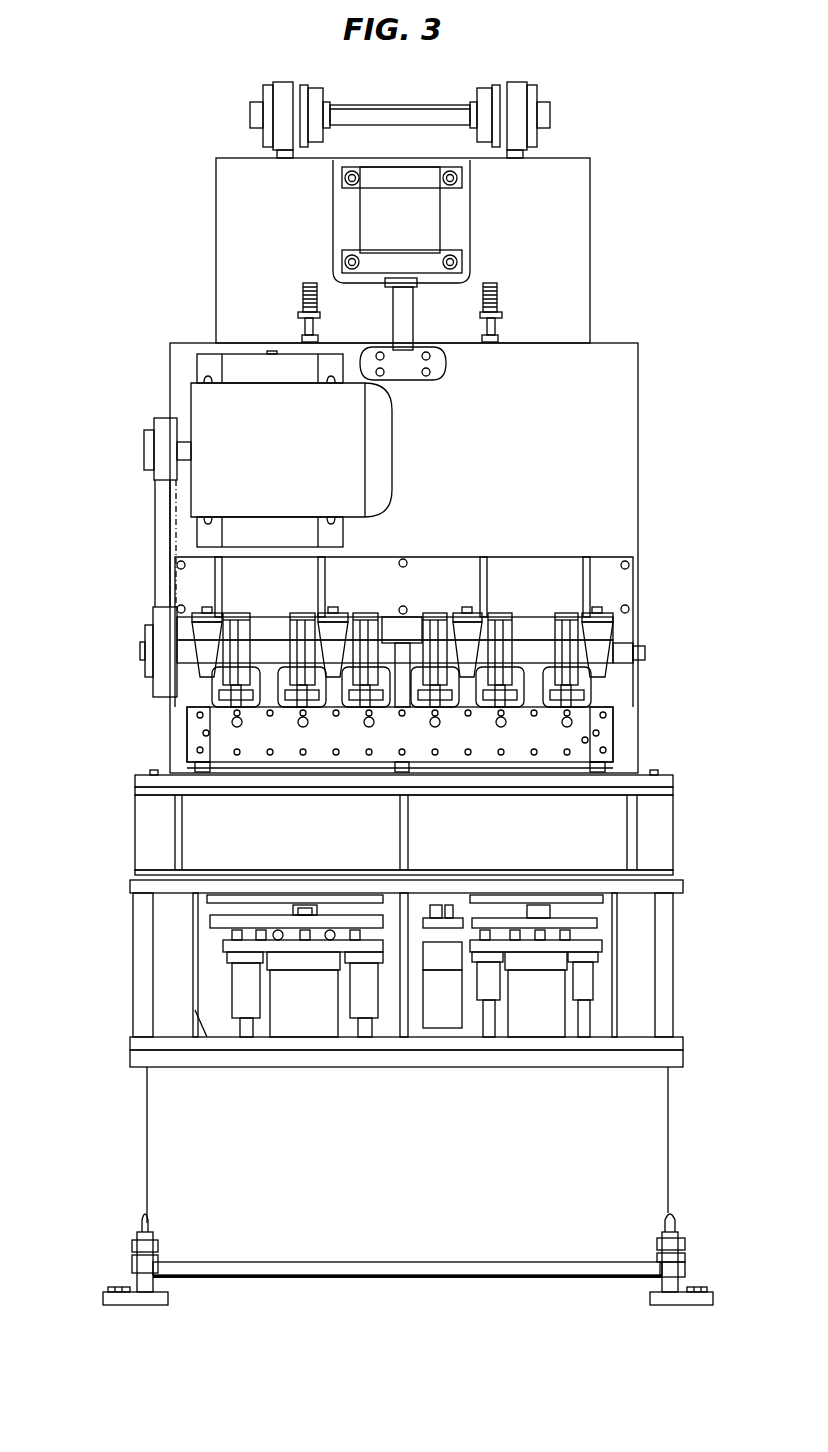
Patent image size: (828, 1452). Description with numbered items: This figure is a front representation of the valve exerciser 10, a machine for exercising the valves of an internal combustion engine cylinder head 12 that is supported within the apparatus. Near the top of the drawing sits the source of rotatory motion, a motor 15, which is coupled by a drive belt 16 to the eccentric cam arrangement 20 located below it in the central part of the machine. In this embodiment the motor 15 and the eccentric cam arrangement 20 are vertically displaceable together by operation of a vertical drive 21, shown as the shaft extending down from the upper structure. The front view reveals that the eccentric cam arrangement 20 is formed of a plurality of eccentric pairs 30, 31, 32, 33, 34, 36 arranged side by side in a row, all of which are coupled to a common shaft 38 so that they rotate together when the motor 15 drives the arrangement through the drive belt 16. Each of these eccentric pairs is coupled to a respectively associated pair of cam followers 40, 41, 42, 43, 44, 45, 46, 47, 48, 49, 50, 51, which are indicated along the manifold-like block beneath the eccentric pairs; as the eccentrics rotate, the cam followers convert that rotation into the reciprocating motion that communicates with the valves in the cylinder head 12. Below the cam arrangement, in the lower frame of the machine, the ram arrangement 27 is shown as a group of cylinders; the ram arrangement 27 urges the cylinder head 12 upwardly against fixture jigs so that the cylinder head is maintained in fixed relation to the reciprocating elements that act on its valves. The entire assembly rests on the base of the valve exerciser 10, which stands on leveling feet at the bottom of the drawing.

The valve exerciser 10 is at (419, 1179).
The cylinder head 12 is at (190, 720).
The motor 15 is at (383, 453).
The drive belt 16 is at (155, 542).
The eccentric cam arrangement 20 is at (125, 645).
The vertical drive 21 is at (403, 315).
The ram arrangement 27 is at (303, 1018).
The eccentric pair 30 is at (237, 612).
The eccentric pair 31 is at (298, 612).
The eccentric pair 32 is at (358, 612).
The eccentric pair 33 is at (432, 612).
The eccentric pair 34 is at (503, 612).
The eccentric pair 36 is at (563, 612).
The common shaft 38 is at (402, 648).
The cam follower 40 is at (212, 707).
The cam follower 41 is at (248, 707).
The cam follower 42 is at (283, 707).
The cam follower 43 is at (315, 707).
The cam follower 44 is at (343, 707).
The cam follower 45 is at (377, 707).
The cam follower 46 is at (420, 707).
The cam follower 47 is at (453, 707).
The cam follower 48 is at (483, 707).
The cam follower 49 is at (520, 707).
The cam follower 50 is at (552, 707).
The cam follower 51 is at (585, 707).